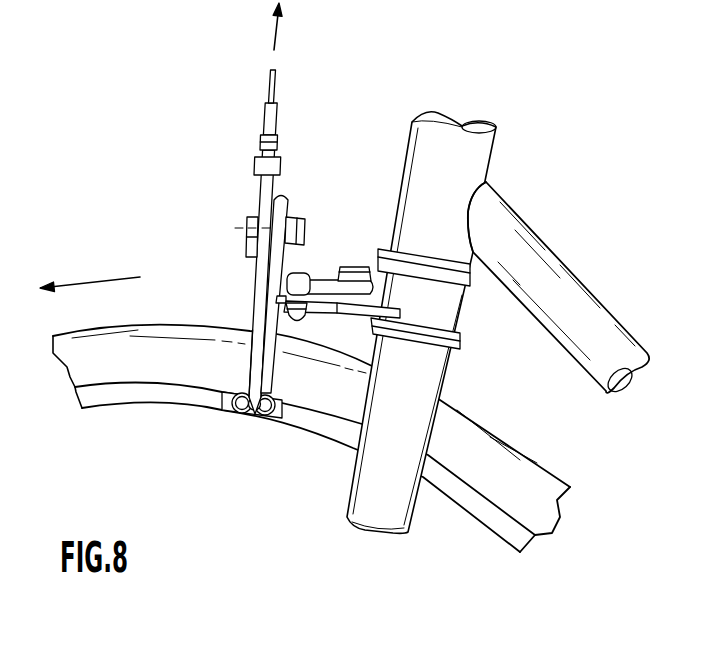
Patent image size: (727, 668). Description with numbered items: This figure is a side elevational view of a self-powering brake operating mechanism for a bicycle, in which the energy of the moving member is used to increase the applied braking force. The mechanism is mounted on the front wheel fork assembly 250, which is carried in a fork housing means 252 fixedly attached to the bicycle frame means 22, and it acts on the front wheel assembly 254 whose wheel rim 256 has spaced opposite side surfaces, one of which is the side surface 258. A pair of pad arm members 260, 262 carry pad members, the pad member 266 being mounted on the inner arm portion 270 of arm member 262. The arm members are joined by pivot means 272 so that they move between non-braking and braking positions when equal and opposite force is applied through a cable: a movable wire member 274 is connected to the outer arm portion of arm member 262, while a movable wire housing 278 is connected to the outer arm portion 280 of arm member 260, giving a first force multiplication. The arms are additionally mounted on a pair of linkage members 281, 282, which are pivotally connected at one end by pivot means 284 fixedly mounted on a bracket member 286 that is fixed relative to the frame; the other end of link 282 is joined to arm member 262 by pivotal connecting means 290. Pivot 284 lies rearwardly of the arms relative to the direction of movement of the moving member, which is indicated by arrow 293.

The bicycle frame means 22 is at (578, 265).
The front wheel fork assembly 250 is at (462, 327).
The fork housing means 252 is at (493, 163).
The front wheel assembly 254 is at (540, 541).
The wheel rim 256 is at (507, 543).
The side surface of the wheel rim 258 is at (478, 503).
The pad arm member 260 is at (251, 206).
The pad arm member 262 is at (289, 193).
The pad member 266 is at (225, 410).
The inner arm portion 270 is at (258, 369).
The pivot means 272 is at (305, 230).
The movable wire member 274 is at (278, 86).
The movable wire housing 278 is at (262, 134).
The outer arm portion 280 is at (254, 165).
The linkage member 281 is at (322, 280).
The linkage member 282 is at (322, 297).
The pivot means 284 is at (360, 266).
The bracket member 286 is at (365, 307).
The pivotal connecting means 290 is at (297, 324).
The arrow 293 is at (98, 282).